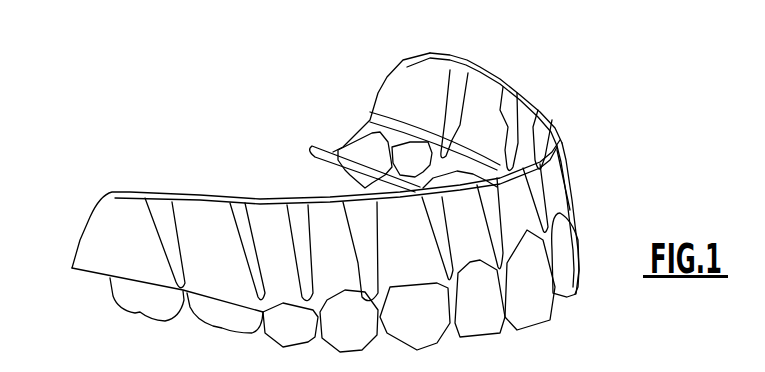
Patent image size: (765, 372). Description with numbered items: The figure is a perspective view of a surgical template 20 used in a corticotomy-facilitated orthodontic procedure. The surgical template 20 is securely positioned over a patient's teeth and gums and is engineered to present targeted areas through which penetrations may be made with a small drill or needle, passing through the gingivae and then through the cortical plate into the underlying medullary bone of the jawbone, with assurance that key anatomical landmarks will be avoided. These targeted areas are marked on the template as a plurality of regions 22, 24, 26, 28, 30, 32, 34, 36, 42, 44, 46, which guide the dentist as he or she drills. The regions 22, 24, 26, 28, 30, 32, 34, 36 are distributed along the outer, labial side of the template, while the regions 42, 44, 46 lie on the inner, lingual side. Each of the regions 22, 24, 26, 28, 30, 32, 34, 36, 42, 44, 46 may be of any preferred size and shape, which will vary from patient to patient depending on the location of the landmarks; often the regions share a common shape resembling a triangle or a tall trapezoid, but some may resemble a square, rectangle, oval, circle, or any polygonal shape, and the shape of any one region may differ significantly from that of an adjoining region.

The surgical template 20 is at (66, 224).
The region 22 is at (160, 210).
The region 24 is at (245, 218).
The region 26 is at (300, 215).
The region 28 is at (367, 257).
The region 30 is at (458, 300).
The region 32 is at (503, 248).
The region 34 is at (545, 212).
The region 36 is at (575, 193).
The region 42 is at (546, 120).
The region 44 is at (511, 97).
The region 46 is at (457, 77).